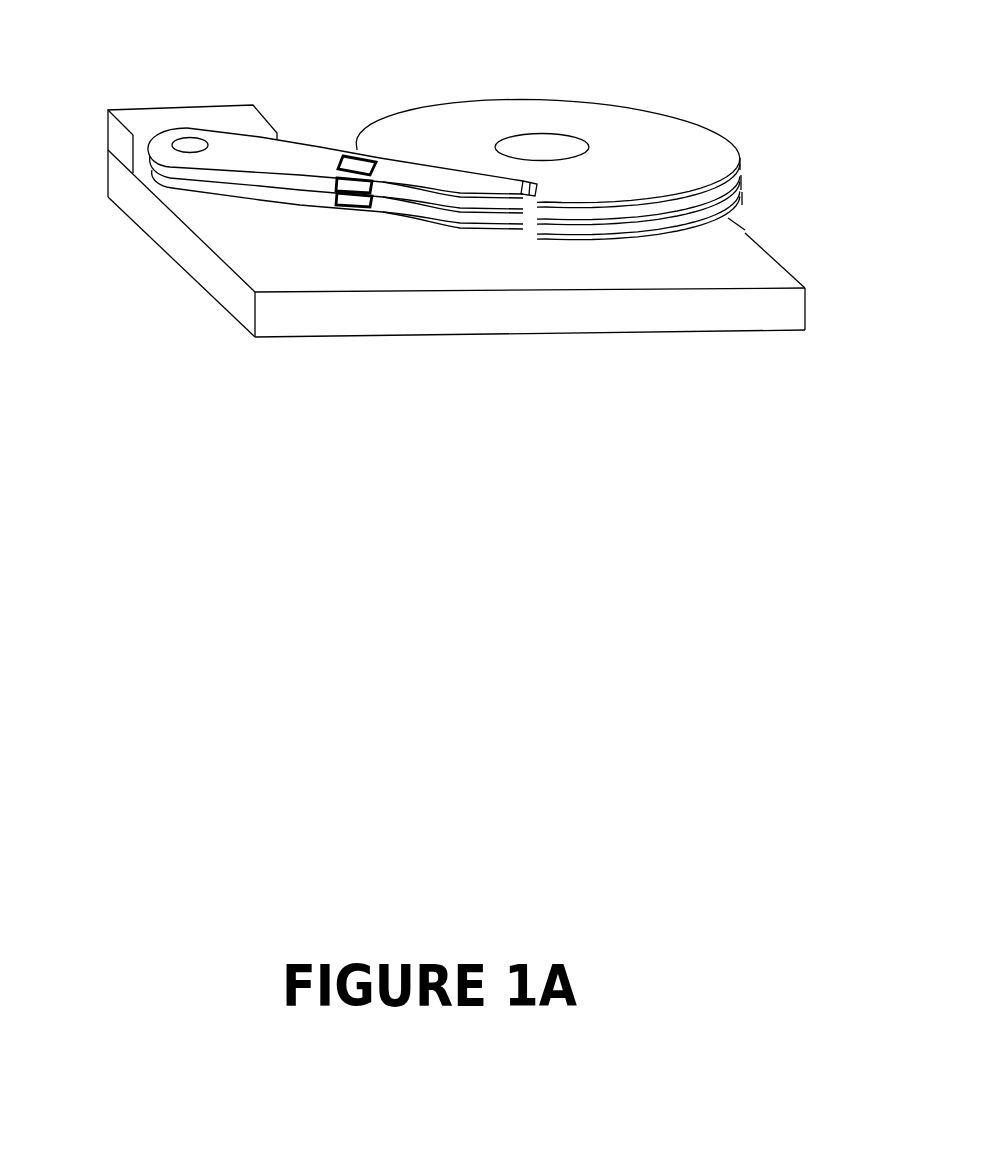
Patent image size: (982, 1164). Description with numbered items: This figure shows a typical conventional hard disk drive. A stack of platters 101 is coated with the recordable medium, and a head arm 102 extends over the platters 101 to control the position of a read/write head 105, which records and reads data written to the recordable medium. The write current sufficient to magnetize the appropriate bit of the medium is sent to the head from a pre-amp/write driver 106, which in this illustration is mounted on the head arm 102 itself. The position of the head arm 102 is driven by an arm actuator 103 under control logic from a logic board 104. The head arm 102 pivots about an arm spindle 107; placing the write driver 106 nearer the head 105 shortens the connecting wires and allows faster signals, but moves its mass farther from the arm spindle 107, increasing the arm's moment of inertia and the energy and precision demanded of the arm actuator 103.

The platters 101 is at (584, 139).
The head arm 102 is at (335, 123).
The arm actuator 103 is at (177, 111).
The logic board 104 is at (441, 243).
The read/write head 105 is at (476, 293).
The pre-amp/write driver 106 is at (284, 307).
The arm spindle 107 is at (121, 180).